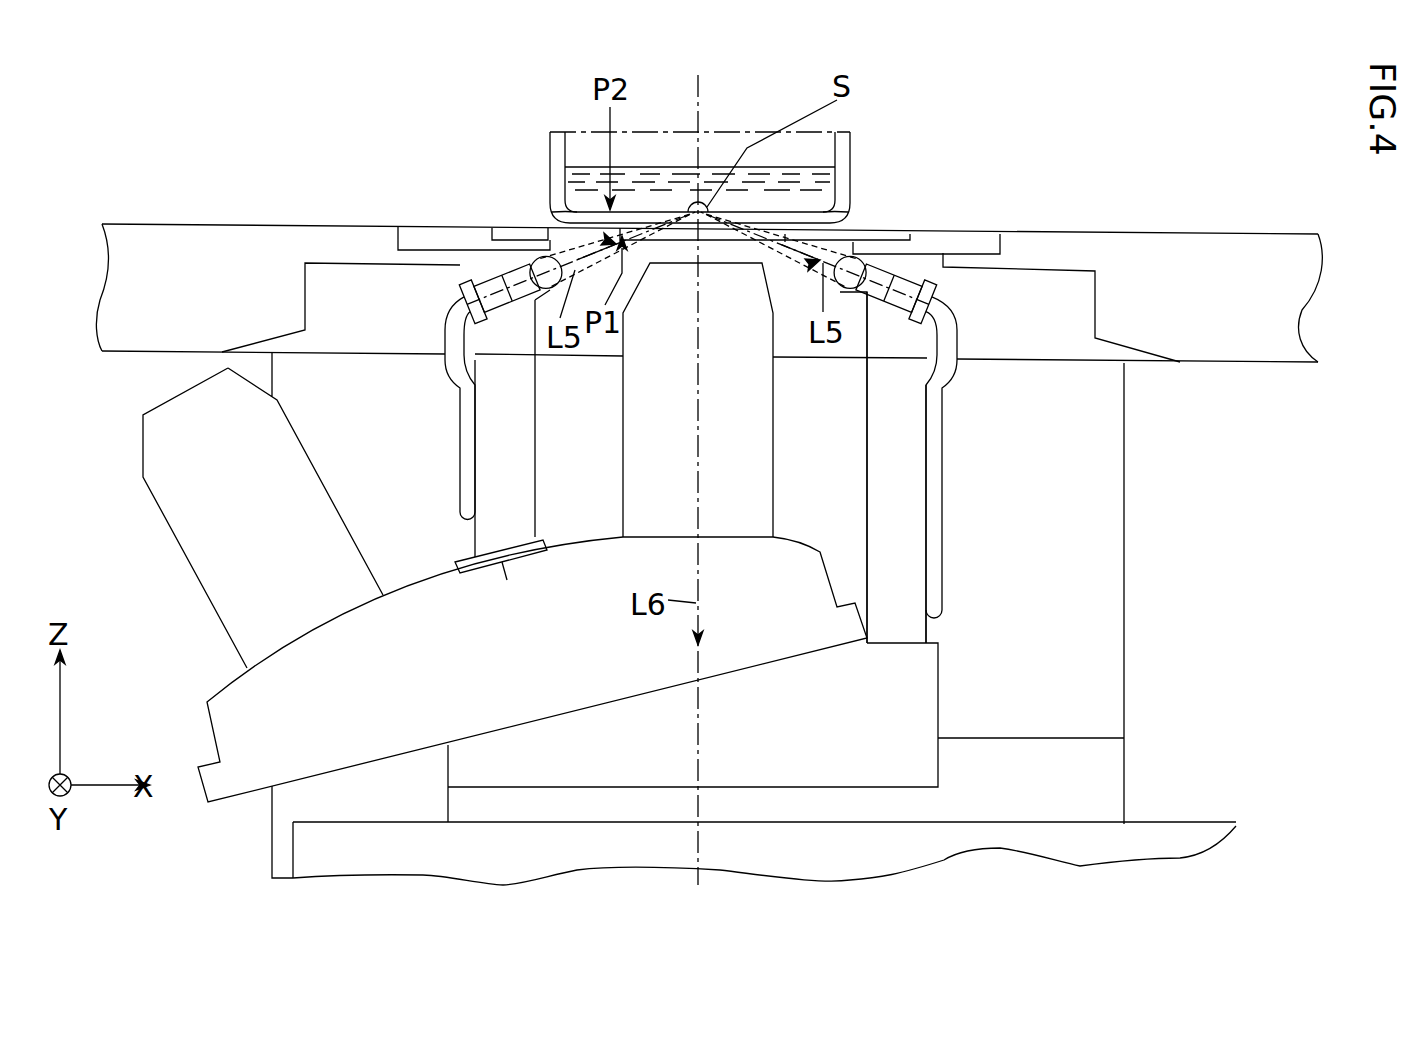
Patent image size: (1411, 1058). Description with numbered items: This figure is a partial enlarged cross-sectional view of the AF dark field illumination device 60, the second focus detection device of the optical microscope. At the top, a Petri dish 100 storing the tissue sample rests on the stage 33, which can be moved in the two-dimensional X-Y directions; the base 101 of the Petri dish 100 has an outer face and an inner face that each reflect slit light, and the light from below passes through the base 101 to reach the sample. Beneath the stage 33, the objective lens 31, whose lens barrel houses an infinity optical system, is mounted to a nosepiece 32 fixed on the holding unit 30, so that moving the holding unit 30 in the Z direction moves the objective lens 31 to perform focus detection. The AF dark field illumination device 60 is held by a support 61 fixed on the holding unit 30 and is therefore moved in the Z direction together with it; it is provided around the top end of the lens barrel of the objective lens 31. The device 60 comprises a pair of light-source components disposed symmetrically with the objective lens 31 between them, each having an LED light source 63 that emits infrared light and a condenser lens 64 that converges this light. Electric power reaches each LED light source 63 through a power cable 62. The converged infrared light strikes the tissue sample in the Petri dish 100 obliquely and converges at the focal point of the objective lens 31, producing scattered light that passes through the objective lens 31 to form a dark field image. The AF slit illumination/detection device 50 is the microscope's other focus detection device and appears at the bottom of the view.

The stage 33 is at (195, 240).
The Petri dish 100 is at (845, 142).
The base 101 is at (592, 220).
The condenser lens 64 is at (863, 257).
The LED light source 63 is at (917, 260).
The AF dark field illumination device 60 is at (948, 297).
The power cable 62 is at (932, 420).
The support 61 is at (912, 468).
The objective lens 31 is at (778, 414).
The nosepiece 32 is at (797, 542).
The holding unit 30 is at (932, 700).
The AF slit illumination/detection device 50 is at (335, 850).